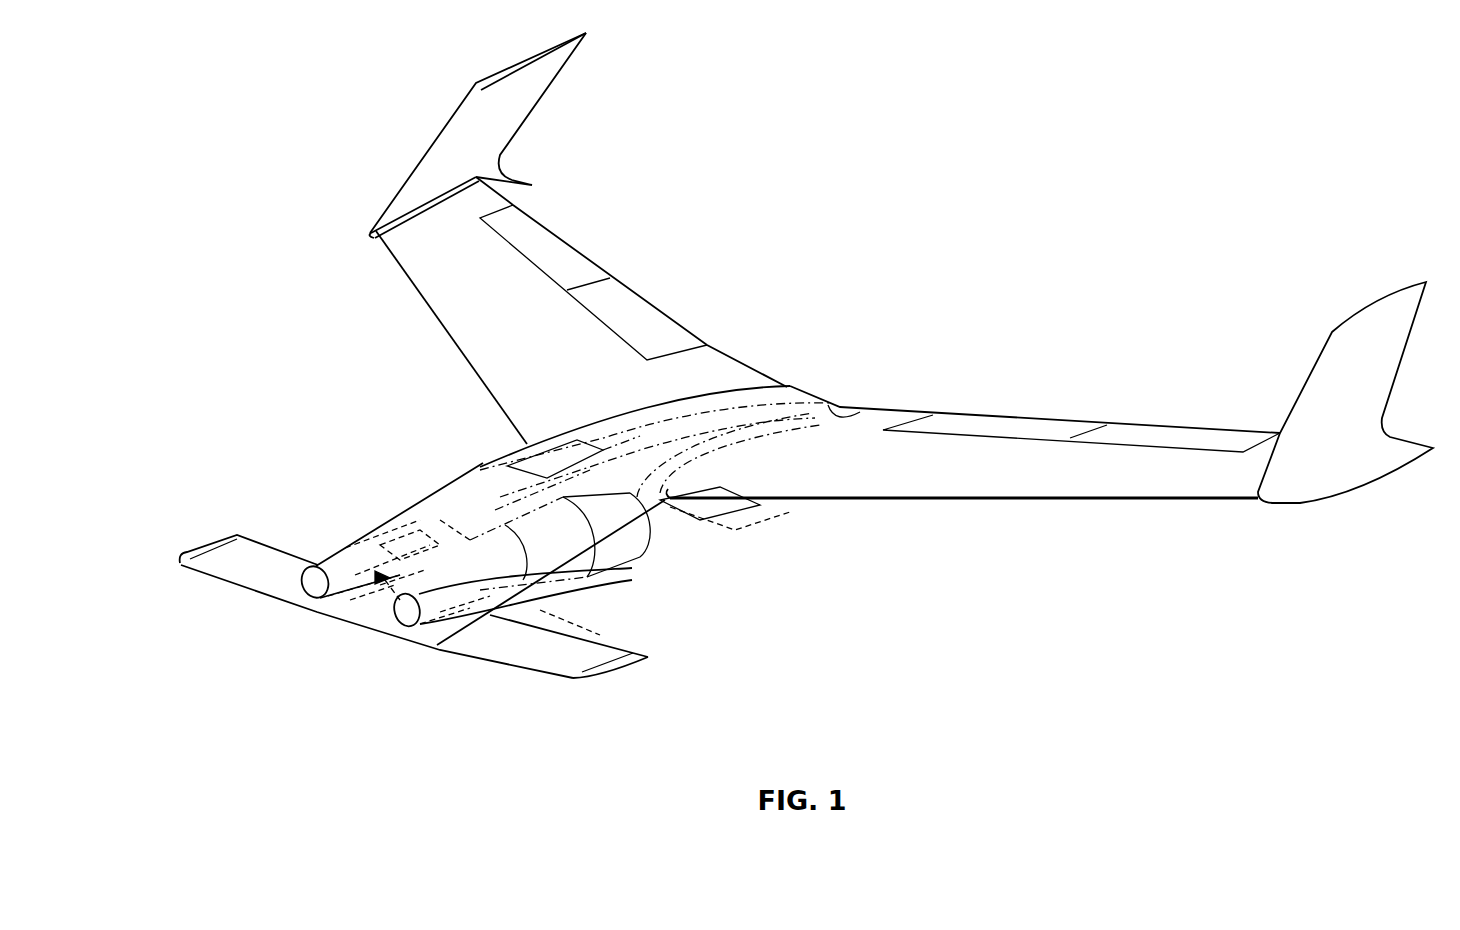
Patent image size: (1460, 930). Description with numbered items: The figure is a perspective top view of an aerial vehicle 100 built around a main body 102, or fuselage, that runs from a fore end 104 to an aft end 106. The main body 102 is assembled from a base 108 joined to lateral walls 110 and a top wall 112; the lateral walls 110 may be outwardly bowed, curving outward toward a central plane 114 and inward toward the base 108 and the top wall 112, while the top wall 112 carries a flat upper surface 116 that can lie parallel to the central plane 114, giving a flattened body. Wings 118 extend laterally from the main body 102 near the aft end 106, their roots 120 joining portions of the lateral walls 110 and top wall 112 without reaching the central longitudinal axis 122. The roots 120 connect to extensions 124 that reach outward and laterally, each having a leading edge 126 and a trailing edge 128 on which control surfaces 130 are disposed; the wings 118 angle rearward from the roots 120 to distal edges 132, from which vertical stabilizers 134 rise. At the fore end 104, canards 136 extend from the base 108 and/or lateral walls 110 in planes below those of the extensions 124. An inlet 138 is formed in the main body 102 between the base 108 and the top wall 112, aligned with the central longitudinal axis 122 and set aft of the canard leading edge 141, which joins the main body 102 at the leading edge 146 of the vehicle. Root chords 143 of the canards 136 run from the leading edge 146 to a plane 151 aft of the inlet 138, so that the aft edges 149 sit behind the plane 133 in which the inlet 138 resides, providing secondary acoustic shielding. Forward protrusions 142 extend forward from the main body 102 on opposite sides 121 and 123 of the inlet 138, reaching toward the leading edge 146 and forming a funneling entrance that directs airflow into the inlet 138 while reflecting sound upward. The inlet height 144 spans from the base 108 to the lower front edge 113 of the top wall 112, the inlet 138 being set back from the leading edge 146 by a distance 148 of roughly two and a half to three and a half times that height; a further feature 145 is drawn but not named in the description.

The aerial vehicle 100 is at (217, 312).
The main body 102 is at (723, 398).
The fore end 104 is at (364, 543).
The aft end 106 is at (823, 413).
The base 108 is at (613, 573).
The lateral walls 110 is at (433, 570).
The top wall 112 is at (610, 427).
The lower front edge 113 is at (387, 557).
The central plane 114 is at (670, 507).
The flat upper surface 116 is at (537, 462).
The wings 118 is at (440, 308).
The roots 120 is at (693, 390).
The opposite side of the inlet 121 is at (357, 553).
The central longitudinal axis 122 is at (547, 500).
The opposite side of the inlet 123 is at (407, 557).
The extensions 124 is at (394, 262).
The leading edges 126 is at (460, 352).
The trailing edges 128 is at (585, 253).
The control surfaces 130 is at (517, 230).
The distal edges 132 is at (368, 232).
The plane 133 is at (453, 577).
The vertical stabilizers 134 is at (458, 112).
The canards 136 is at (200, 566).
The inlet 138 is at (377, 577).
The canard leading edge 141 is at (216, 587).
The forward protrusions 142 is at (312, 578).
The root chords 143 is at (305, 597).
The height 144 is at (398, 567).
The internal member 145 is at (474, 620).
The leading edge 146 is at (372, 601).
The distance 148 is at (390, 580).
The aft edges 149 is at (632, 645).
The plane 151 is at (569, 605).